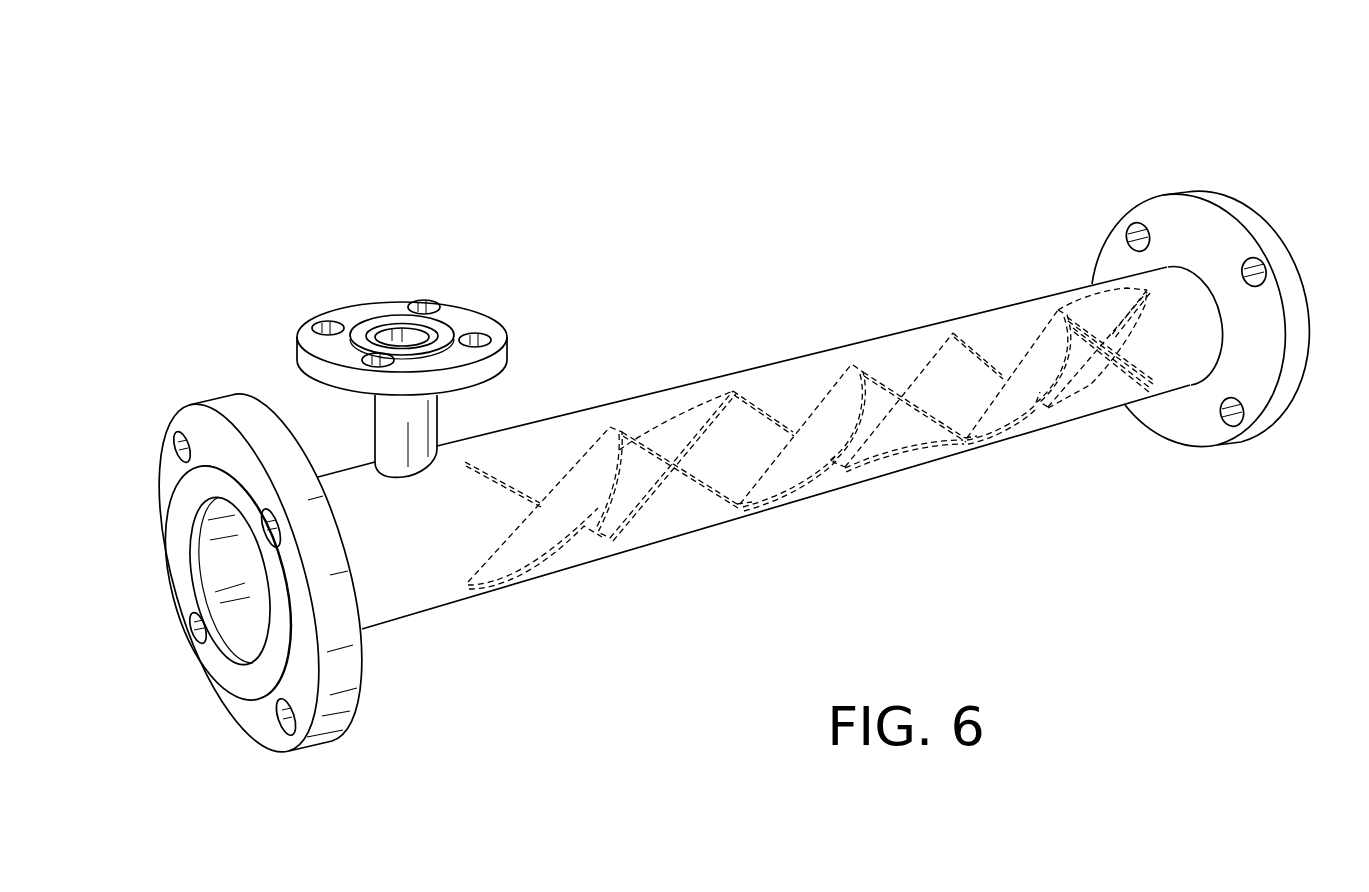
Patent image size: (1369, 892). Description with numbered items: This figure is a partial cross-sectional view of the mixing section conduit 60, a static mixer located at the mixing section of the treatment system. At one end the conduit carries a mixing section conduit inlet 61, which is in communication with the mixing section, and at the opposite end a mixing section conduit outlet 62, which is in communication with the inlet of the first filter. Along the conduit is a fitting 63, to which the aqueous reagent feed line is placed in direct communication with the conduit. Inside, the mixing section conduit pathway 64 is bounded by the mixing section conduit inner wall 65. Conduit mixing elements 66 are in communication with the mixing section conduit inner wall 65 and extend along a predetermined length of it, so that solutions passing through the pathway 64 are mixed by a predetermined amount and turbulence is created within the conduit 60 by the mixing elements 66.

The mixing section conduit 60 is at (920, 236).
The mixing section conduit inlet 61 is at (238, 408).
The mixing section conduit outlet 62 is at (1279, 219).
The fitting 63 is at (462, 318).
The mixing section conduit pathway 64 is at (251, 602).
The mixing section conduit inner wall 65 is at (222, 556).
The conduit mixing elements 66 is at (825, 418).